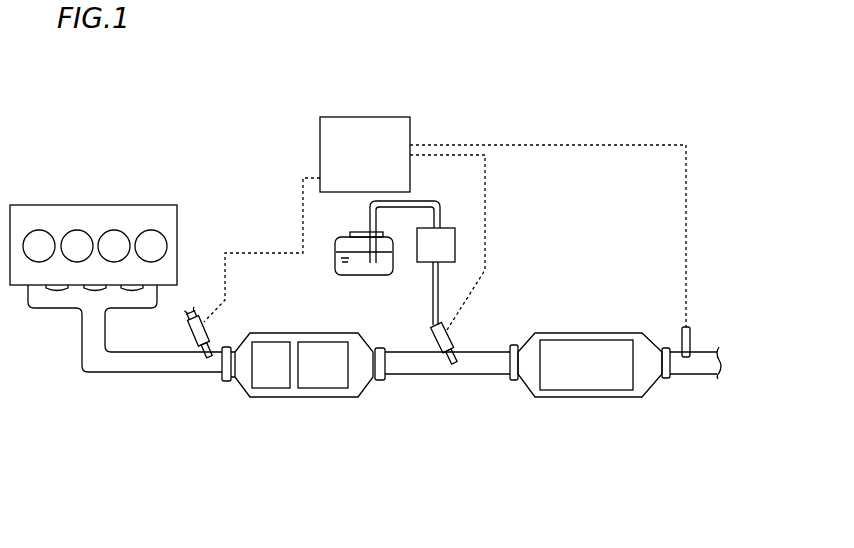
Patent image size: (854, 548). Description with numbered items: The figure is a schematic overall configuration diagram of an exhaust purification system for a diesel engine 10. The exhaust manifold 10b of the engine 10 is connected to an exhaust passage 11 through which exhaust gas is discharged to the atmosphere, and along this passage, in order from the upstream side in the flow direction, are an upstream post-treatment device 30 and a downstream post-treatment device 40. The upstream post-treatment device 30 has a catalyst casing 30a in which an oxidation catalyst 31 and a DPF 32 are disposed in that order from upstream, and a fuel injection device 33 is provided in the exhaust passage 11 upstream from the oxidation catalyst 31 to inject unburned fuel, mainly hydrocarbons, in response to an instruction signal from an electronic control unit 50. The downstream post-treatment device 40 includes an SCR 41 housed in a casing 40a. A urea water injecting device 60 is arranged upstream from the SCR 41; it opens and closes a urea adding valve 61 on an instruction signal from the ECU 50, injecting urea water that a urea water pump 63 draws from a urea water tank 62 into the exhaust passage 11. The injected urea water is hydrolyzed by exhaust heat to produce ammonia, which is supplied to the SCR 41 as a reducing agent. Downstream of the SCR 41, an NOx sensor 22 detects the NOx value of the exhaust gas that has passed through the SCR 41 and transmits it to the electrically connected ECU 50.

The diesel engine 10 is at (97, 203).
The exhaust manifold 10b is at (53, 312).
The exhaust passage 11 is at (113, 377).
The NOx sensor 22 is at (690, 338).
The upstream post-treatment device 30 is at (303, 399).
The catalyst casing 30a is at (292, 397).
The oxidation catalyst 31 is at (281, 374).
The DPF 32 is at (333, 374).
The fuel injection device 33 is at (205, 334).
The downstream post-treatment device 40 is at (590, 399).
The casing 40a is at (573, 397).
The SCR 41 is at (597, 371).
The electronic control unit 50 is at (380, 117).
The urea water injecting device 60 is at (406, 271).
The urea adding valve 61 is at (430, 343).
The urea water tank 62 is at (362, 278).
The urea water pump 63 is at (446, 254).